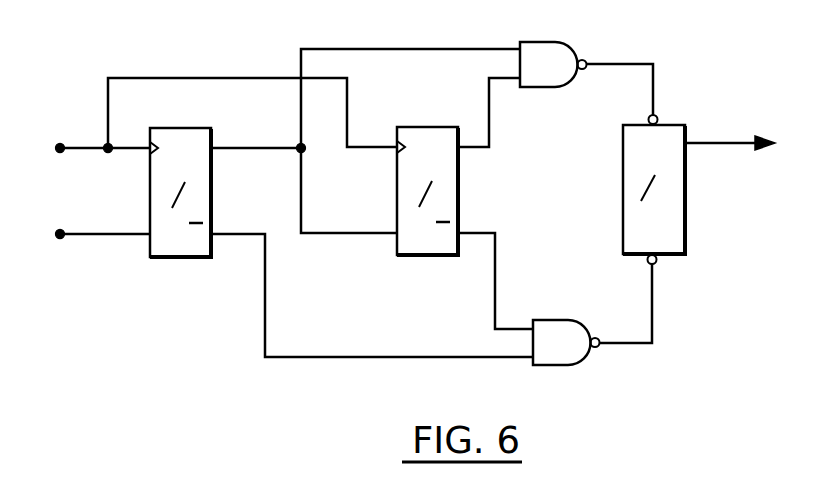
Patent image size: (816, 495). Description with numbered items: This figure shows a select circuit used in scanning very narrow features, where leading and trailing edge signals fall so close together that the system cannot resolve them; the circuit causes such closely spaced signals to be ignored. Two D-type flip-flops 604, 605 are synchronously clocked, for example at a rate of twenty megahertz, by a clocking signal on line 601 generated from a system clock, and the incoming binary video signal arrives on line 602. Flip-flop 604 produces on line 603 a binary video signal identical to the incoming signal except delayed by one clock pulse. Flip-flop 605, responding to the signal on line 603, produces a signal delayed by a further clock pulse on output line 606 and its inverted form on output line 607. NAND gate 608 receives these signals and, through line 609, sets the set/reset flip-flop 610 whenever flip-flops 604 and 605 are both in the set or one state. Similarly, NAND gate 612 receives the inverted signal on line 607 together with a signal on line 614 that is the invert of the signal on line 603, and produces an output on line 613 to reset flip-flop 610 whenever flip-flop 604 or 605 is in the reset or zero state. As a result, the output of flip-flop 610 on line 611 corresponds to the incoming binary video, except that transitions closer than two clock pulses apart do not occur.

The clock signal line 601 is at (72, 150).
The incoming video signal line 602 is at (95, 236).
The delayed binary video signal line 603 is at (377, 232).
The D-type flip-flop 604 is at (180, 258).
The D-type flip-flop 605 is at (428, 256).
The output line 606 is at (491, 138).
The inverted output line 607 is at (496, 287).
The NAND gate 608 is at (553, 88).
The set line 609 is at (654, 82).
The set/reset flip-flop 610 is at (686, 235).
The output line 611 is at (716, 145).
The NAND gate 612 is at (578, 366).
The reset line 613 is at (653, 325).
The inverted signal line 614 is at (361, 356).